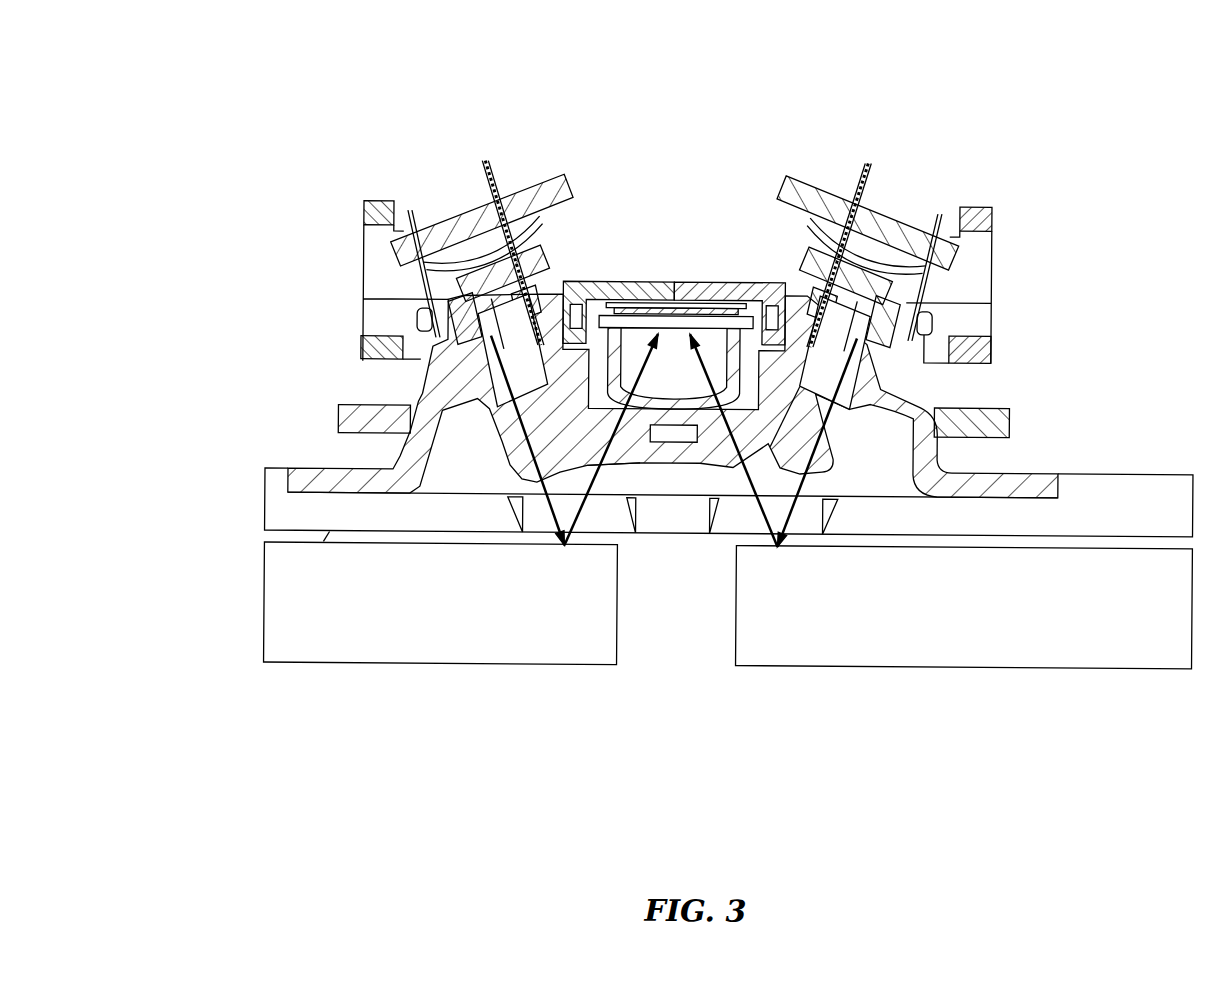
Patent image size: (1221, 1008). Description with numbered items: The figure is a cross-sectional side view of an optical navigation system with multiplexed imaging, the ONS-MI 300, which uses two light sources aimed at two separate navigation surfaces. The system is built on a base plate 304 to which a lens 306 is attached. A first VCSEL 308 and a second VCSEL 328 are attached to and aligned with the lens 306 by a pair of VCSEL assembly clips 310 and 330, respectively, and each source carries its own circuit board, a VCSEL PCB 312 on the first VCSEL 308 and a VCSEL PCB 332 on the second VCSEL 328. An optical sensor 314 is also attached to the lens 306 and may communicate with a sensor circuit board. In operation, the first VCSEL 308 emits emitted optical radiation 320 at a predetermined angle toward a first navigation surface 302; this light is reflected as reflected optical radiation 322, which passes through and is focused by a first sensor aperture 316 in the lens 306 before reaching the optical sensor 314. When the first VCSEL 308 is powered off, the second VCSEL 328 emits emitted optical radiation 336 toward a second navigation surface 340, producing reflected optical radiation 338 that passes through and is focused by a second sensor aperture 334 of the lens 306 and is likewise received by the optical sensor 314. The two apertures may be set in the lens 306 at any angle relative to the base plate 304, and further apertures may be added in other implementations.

The optical navigation system with multiplexed imaging 300 is at (940, 92).
The first navigation surface 302 is at (964, 607).
The base plate 304 is at (265, 510).
The lens 306 is at (1057, 474).
The first VCSEL 308 is at (862, 168).
The VCSEL assembly clip 310 is at (992, 208).
The VCSEL PCB 312 is at (782, 173).
The optical sensor 314 is at (598, 280).
The first sensor aperture 316 is at (716, 345).
The emitted optical radiation 320 is at (800, 480).
The reflected optical radiation 322 is at (750, 518).
The second VCSEL 328 is at (487, 161).
The VCSEL assembly clip 330 is at (360, 215).
The VCSEL PCB 332 is at (573, 181).
The second sensor aperture 334 is at (630, 345).
The emitted optical radiation 336 is at (537, 495).
The reflected optical radiation 338 is at (603, 476).
The second navigation surface 340 is at (441, 603).